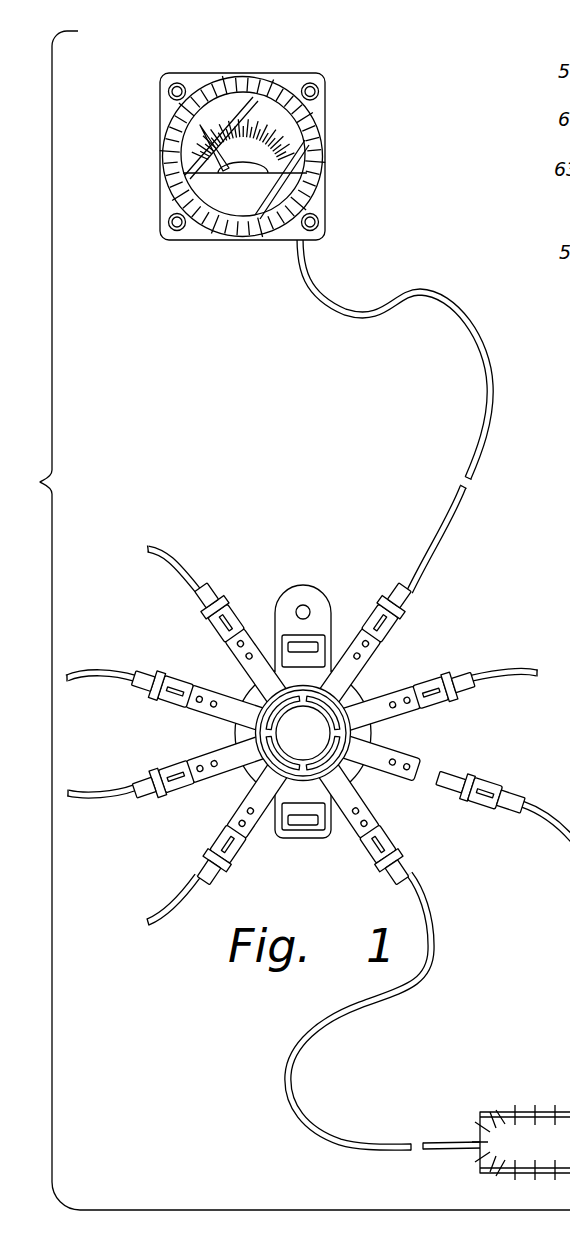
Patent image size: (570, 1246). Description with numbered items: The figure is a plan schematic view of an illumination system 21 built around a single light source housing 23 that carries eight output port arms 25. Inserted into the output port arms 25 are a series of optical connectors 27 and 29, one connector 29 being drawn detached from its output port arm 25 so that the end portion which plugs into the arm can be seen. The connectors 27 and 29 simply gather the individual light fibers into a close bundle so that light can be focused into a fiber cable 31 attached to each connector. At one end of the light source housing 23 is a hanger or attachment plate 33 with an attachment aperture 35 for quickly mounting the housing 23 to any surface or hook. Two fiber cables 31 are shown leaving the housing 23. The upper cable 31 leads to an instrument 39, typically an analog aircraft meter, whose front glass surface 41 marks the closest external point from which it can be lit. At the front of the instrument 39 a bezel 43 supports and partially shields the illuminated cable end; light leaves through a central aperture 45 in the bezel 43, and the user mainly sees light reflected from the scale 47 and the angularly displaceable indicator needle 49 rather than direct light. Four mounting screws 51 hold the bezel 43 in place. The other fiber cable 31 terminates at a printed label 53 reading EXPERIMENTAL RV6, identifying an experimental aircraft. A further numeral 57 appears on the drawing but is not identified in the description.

The illumination system 21 is at (287, 620).
The light source housing 23 is at (309, 698).
The output port arms 25 is at (215, 688).
The optical connectors 27 is at (233, 606).
The optical connector 29 is at (497, 778).
The fiber cable 31 is at (492, 437).
The attachment plate 33 is at (325, 589).
The attachment aperture 35 is at (303, 605).
The instrument 39 is at (270, 156).
The front glass surface 41 is at (246, 203).
The bezel 43 is at (286, 78).
The central aperture 45 is at (226, 94).
The scale 47 is at (297, 157).
The indicator needle 49 is at (200, 160).
The mounting screws 51 is at (168, 91).
The printed label 53 is at (503, 1112).
The screw 57 is at (319, 92).